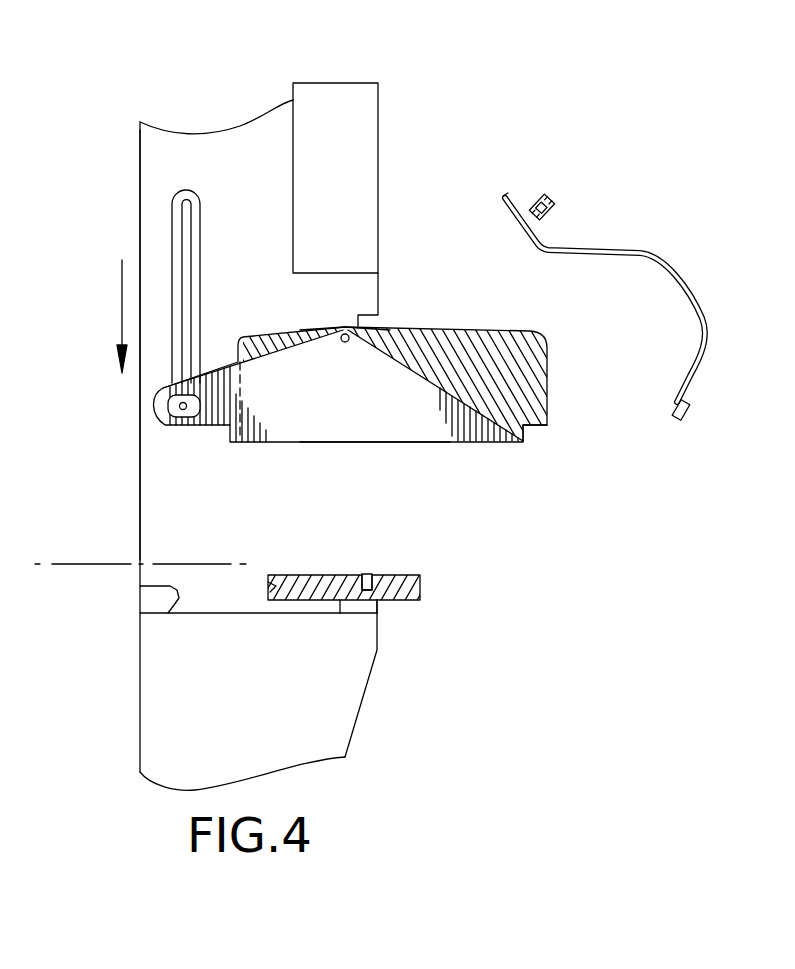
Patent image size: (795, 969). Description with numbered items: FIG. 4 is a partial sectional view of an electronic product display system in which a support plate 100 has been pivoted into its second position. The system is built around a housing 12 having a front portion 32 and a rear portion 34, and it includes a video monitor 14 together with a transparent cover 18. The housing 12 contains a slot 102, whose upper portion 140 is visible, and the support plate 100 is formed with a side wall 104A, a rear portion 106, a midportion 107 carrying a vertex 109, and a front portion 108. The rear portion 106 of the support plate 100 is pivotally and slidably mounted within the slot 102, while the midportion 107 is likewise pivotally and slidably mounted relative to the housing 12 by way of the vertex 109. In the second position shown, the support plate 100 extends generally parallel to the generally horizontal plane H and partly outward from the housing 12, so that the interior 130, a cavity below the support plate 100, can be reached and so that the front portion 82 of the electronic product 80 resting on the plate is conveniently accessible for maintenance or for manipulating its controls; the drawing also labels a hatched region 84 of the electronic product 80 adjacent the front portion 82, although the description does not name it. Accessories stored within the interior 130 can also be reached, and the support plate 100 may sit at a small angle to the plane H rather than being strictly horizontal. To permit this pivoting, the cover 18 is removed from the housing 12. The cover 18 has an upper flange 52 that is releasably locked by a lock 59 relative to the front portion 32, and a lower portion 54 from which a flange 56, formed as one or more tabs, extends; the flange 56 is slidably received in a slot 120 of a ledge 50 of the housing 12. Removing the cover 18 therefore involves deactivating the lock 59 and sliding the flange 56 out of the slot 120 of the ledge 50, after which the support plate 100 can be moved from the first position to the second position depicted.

The housing 12 is at (394, 113).
The video monitor 14 is at (348, 172).
The cover 18 is at (640, 301).
The front portion 32 is at (378, 290).
The rear portion 34 is at (139, 160).
The ledge 50 is at (400, 601).
The upper flange 52 is at (508, 197).
The lower portion 54 is at (703, 372).
The flange 56 is at (686, 418).
The lock 59 is at (548, 198).
The electronic product 80 is at (340, 376).
The front portion 82 is at (467, 381).
The left cam surface 84 is at (255, 340).
The support plate 100 is at (340, 376).
The slot 102 is at (172, 250).
The side wall 104A is at (316, 384).
The rear portion 106 is at (165, 425).
The midportion 107 is at (374, 432).
The front portion 108 is at (513, 443).
The vertex 109 is at (345, 332).
The slot 120 is at (372, 577).
The interior 130 is at (178, 523).
The upper portion 140 is at (186, 190).
The generally horizontal plane H is at (140, 580).